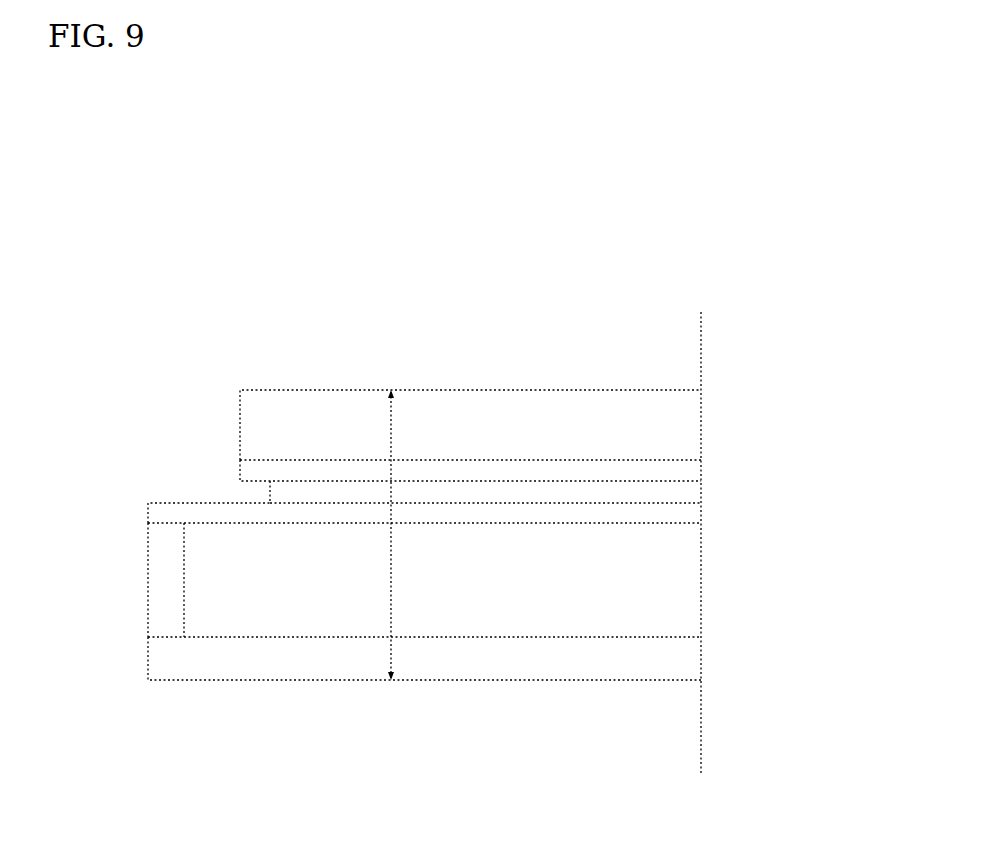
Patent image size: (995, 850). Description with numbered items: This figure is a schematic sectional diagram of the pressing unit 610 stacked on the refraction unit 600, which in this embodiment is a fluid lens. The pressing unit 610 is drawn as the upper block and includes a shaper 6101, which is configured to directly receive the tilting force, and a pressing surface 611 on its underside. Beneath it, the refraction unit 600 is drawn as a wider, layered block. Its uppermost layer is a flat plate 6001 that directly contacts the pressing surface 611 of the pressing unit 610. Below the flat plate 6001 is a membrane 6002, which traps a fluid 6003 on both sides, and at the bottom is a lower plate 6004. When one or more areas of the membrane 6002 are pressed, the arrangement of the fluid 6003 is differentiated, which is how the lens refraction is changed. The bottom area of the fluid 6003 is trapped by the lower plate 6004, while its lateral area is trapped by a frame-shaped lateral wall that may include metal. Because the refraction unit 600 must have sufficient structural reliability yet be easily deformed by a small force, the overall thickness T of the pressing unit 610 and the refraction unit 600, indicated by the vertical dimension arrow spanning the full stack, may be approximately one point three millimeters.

The refraction unit 600 is at (500, 580).
The flat plate 6001 is at (678, 495).
The membrane 6002 is at (678, 520).
The fluid 6003 is at (678, 588).
The lower plate 6004 is at (472, 658).
The pressing unit 610 is at (546, 436).
The shaper 6101 is at (678, 426).
The pressing surface 611 is at (678, 471).
The thickness T is at (400, 535).